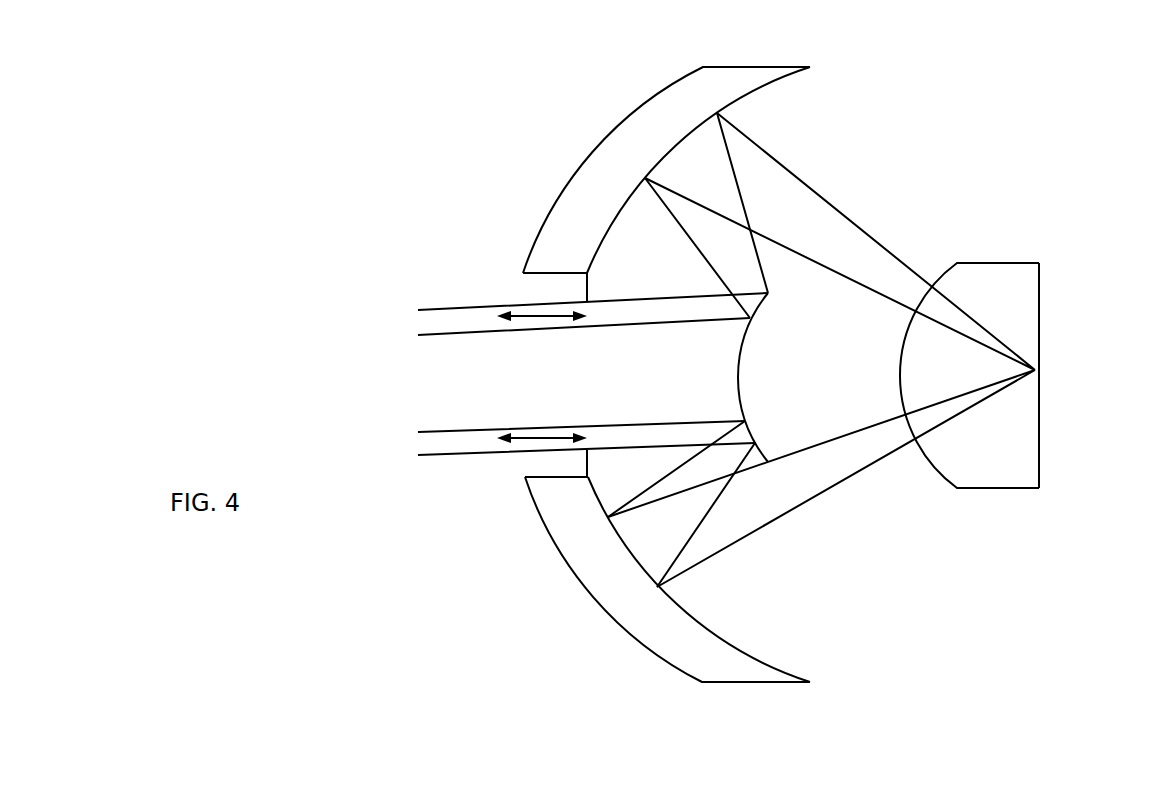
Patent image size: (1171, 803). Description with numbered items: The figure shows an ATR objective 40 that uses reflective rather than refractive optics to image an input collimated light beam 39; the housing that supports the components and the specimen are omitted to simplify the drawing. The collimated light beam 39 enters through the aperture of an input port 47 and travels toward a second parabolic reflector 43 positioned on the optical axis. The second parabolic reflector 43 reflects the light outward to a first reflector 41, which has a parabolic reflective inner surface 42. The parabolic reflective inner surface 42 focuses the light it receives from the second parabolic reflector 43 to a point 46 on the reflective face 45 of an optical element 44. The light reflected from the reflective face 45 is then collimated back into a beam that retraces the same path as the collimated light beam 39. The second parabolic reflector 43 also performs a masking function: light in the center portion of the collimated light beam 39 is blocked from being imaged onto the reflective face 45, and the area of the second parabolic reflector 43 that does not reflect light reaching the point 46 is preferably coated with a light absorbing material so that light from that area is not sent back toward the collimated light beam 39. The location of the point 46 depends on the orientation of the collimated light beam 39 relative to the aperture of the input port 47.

The collimated light beam 39 is at (490, 443).
The ATR objective 40 is at (368, 87).
The first reflector 41 is at (587, 185).
The parabolic reflective inner surface 42 is at (765, 86).
The second parabolic reflector 43 is at (738, 376).
The optical element 44 is at (997, 263).
The reflective face 45 is at (1040, 437).
The point 46 is at (1037, 370).
The input port 47 is at (587, 289).